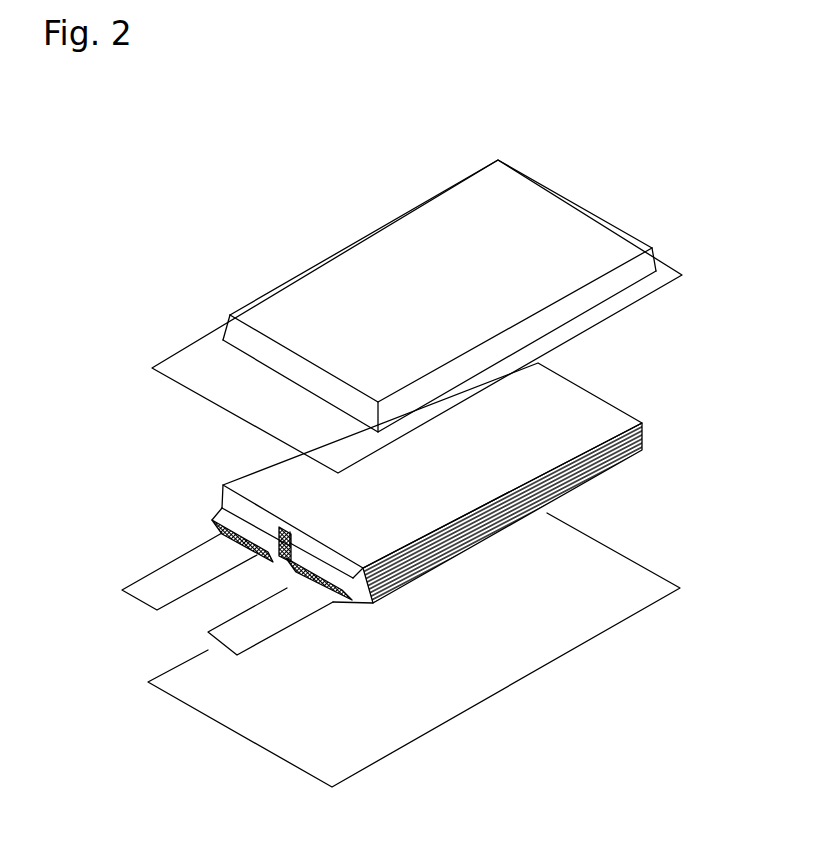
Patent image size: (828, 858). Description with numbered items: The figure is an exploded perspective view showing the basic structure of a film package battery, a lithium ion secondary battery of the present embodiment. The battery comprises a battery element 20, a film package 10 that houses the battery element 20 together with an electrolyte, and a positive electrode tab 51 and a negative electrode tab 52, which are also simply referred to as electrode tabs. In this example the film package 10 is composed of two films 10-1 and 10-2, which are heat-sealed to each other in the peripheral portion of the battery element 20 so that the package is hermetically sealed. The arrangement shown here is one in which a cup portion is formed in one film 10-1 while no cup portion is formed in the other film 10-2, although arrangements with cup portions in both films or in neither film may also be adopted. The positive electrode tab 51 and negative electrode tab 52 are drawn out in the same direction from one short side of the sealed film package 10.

The film package 10 is at (428, 466).
The film 10-1 is at (630, 237).
The film 10-2 is at (630, 617).
The battery element 20 is at (603, 390).
The positive electrode tab 51 is at (128, 583).
The negative electrode tab 52 is at (208, 634).